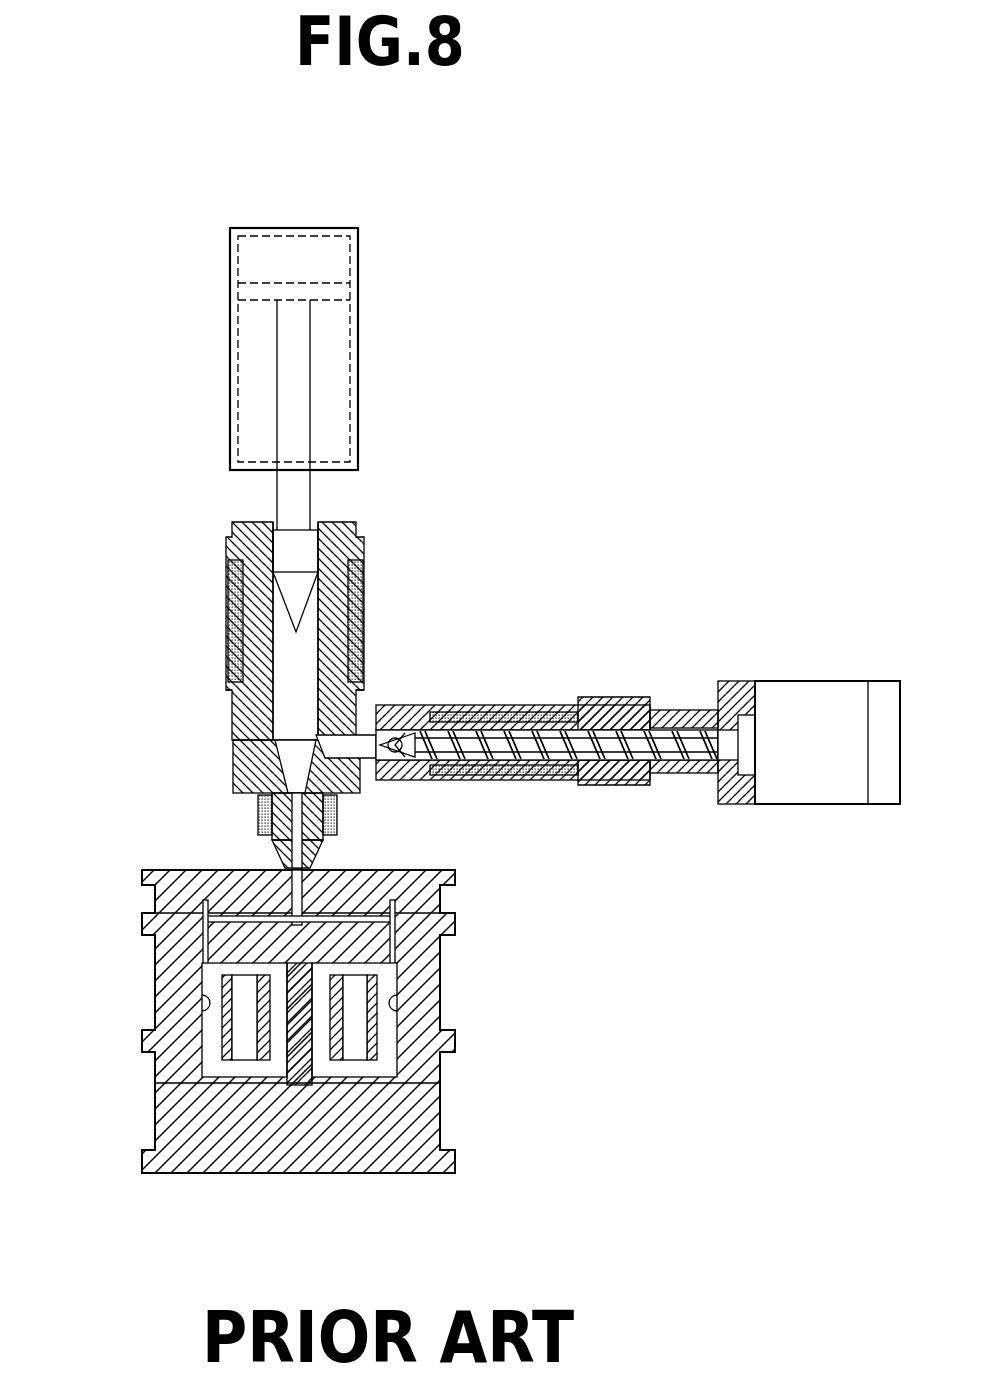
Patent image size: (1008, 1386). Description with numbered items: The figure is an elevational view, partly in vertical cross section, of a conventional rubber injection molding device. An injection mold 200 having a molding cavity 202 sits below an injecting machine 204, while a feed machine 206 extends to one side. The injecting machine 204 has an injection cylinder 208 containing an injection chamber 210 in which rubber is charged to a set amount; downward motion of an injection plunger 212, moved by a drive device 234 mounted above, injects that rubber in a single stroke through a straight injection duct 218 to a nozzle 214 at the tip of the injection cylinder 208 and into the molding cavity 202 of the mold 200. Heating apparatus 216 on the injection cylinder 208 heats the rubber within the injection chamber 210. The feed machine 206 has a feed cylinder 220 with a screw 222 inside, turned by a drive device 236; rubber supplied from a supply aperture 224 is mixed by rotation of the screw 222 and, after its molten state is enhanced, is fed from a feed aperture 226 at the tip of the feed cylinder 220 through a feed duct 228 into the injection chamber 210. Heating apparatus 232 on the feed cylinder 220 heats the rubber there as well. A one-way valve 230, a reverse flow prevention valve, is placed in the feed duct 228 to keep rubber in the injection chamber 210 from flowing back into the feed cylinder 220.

The injection mold 200 is at (297, 1009).
The molding cavity 202 is at (210, 1003).
The injecting machine 204 is at (255, 631).
The feed machine 206 is at (638, 675).
The injection cylinder 208 is at (233, 710).
The injection chamber 210 is at (308, 661).
The injection plunger 212 is at (298, 489).
The nozzle 214 is at (336, 835).
The heating apparatus 216 is at (228, 588).
The injection duct 218 is at (338, 808).
The feed cylinder 220 is at (628, 698).
The screw 222 is at (545, 762).
The supply aperture 224 is at (715, 785).
The feed aperture 226 is at (420, 735).
The feed duct 228 is at (270, 738).
The one-way valve 230 is at (403, 779).
The heating apparatus 232 is at (547, 695).
The drive device 234 is at (358, 443).
The drive device 236 is at (812, 682).